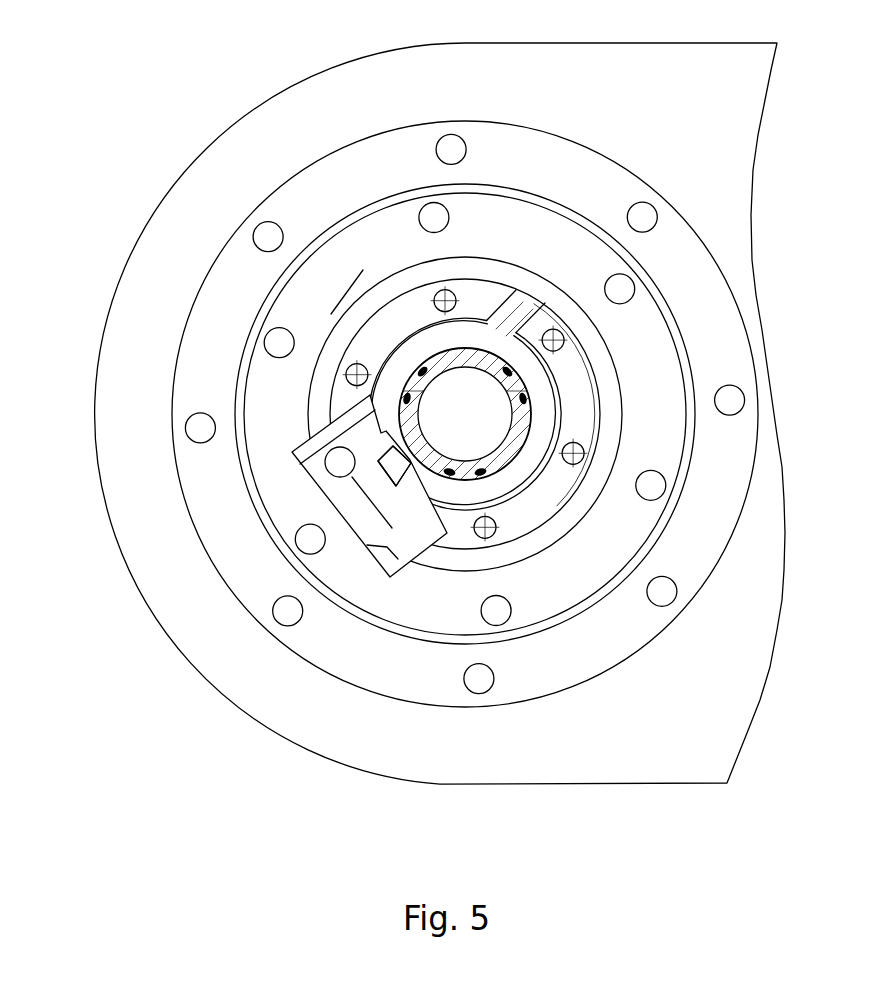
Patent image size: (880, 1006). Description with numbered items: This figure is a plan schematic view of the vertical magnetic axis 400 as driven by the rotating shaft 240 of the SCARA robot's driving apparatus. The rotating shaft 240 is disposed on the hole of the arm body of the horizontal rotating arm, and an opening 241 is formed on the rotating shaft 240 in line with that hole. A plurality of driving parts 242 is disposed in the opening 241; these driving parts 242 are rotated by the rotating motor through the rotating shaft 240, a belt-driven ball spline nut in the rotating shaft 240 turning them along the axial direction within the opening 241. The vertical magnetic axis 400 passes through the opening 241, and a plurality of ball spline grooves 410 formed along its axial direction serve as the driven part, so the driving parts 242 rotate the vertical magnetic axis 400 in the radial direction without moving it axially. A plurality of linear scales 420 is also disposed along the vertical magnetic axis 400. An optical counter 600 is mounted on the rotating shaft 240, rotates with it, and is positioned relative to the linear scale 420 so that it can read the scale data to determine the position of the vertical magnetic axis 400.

The rotating shaft 240 is at (390, 315).
The opening 241 is at (548, 391).
The driving part 242 is at (549, 328).
The vertical magnetic axis 400 is at (510, 447).
The ball spline groove 410 is at (488, 382).
The linear scale 420 is at (408, 472).
The optical counter 600 is at (320, 486).